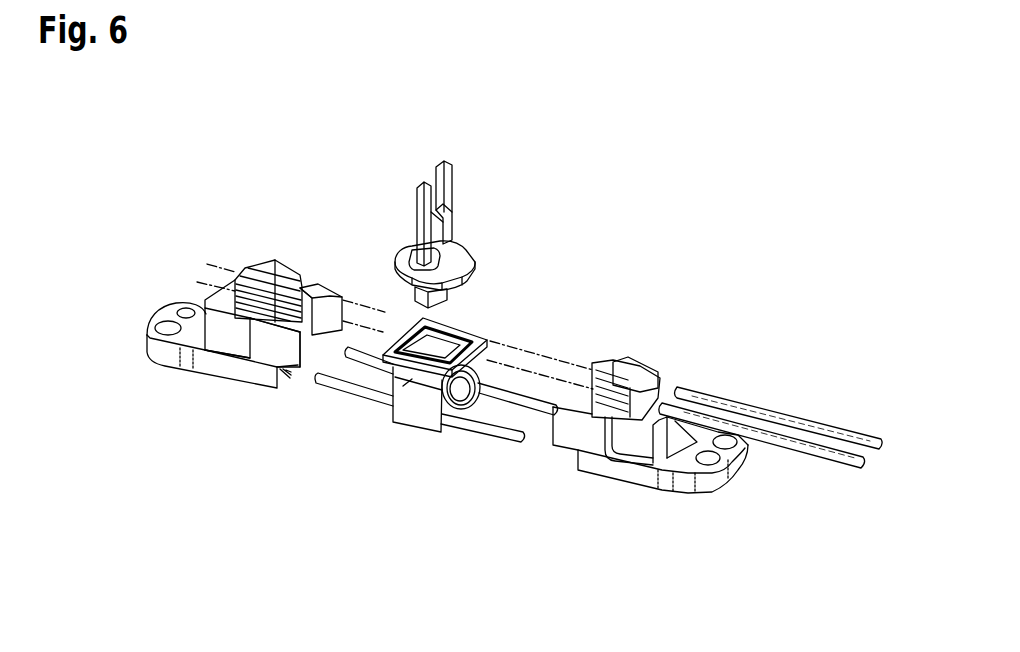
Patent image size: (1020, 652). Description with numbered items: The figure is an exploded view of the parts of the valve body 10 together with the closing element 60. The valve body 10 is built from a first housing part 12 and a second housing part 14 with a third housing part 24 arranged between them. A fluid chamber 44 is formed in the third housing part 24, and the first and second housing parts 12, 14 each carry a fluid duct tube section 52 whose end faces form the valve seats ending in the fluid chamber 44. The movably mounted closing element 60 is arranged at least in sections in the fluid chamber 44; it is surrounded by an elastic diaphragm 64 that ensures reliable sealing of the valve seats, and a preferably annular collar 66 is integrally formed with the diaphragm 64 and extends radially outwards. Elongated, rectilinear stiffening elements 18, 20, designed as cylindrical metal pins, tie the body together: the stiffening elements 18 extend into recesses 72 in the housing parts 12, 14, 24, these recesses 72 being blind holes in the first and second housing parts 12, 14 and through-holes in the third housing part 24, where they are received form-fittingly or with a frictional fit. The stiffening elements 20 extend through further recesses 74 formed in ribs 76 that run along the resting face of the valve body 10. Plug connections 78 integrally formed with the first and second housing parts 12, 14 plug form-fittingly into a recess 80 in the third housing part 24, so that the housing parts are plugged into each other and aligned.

The valve body 10 is at (735, 257).
The first housing part 12 is at (202, 360).
The second housing part 14 is at (630, 480).
The stiffening elements 18 is at (507, 417).
The stiffening elements 20 is at (853, 457).
The third housing part 24 is at (410, 417).
The fluid chamber 44 is at (414, 317).
The fluid duct tube section 52 is at (174, 311).
The closing element 60 is at (415, 213).
The diaphragm 64 is at (453, 296).
The collar 66 is at (466, 250).
The recesses 72 is at (282, 367).
The further recesses 74 is at (277, 293).
The ribs 76 is at (246, 279).
The plug connections 78 is at (282, 348).
The recess 80 is at (383, 400).